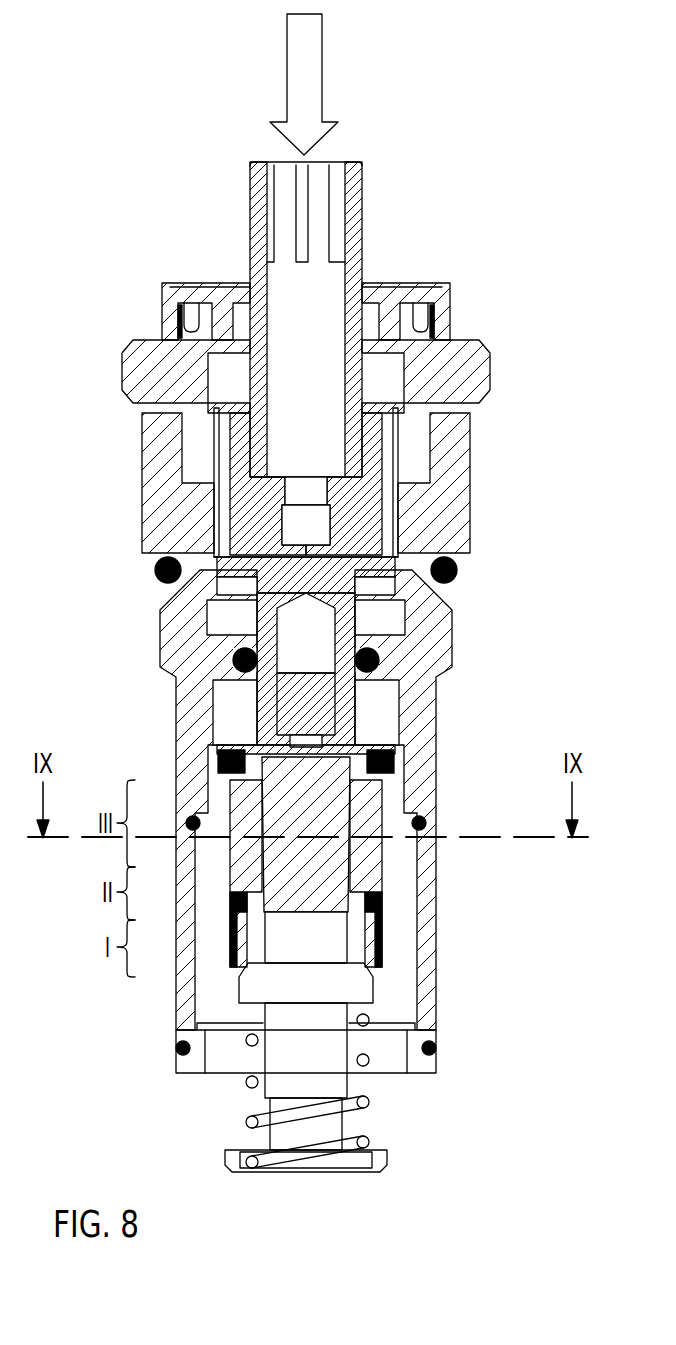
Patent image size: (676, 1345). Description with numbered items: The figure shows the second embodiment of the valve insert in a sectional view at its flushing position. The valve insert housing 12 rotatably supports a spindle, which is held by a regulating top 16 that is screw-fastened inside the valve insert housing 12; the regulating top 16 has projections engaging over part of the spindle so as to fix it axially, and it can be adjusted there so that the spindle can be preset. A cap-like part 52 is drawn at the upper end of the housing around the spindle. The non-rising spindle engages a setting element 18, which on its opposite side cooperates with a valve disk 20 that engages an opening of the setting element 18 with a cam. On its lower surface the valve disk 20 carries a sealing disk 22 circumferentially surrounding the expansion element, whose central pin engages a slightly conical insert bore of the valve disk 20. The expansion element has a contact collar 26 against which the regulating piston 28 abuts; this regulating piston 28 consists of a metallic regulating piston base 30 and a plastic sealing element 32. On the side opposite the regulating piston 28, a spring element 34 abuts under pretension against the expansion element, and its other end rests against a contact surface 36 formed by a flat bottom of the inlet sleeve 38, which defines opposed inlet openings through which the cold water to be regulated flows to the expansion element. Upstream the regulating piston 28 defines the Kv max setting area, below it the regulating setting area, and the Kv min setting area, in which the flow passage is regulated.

The valve insert housing 12 is at (363, 205).
The cap 52 is at (450, 296).
The regulating top 16 is at (482, 360).
The setting element 18 is at (347, 628).
The valve disk 20 is at (367, 748).
The sealing disk 22 is at (373, 758).
The regulating piston base 30 is at (377, 797).
The regulating piston 28 is at (388, 872).
The sealing element 32 is at (383, 908).
The contact collar 26 is at (365, 990).
The inlet sleeve 38 is at (438, 1008).
The spring element 34 is at (369, 1100).
The contact surface 36 is at (357, 1173).